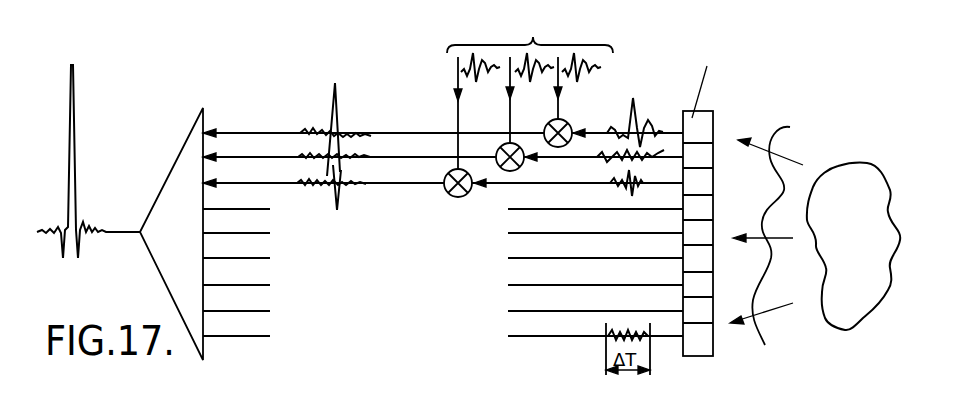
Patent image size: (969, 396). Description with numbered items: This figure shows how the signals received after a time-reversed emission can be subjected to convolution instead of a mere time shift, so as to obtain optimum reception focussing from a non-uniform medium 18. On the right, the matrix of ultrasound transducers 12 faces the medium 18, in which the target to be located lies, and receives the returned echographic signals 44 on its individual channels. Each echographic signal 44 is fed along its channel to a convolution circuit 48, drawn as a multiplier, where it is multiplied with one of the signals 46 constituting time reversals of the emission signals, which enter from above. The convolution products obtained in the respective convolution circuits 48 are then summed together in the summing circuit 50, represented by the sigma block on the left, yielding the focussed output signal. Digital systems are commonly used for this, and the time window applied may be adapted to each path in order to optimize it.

The matrix of ultrasound transducers 12 is at (708, 106).
The medium 18 is at (847, 163).
The echographic signals 44 is at (644, 105).
The time-reversed emission signals 46 is at (530, 88).
The convolution circuits 48 is at (450, 195).
The summing circuit 50 is at (205, 112).